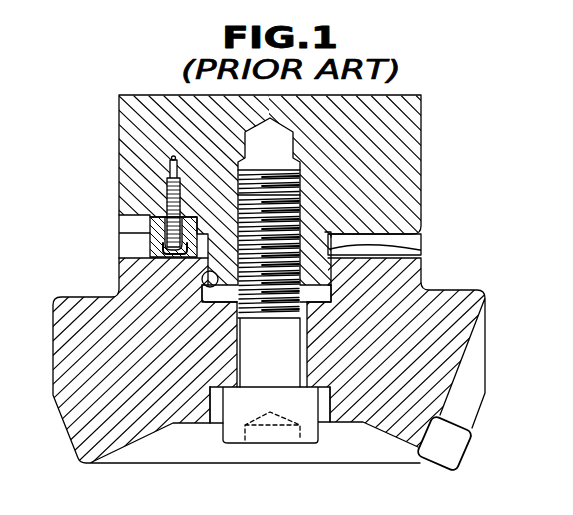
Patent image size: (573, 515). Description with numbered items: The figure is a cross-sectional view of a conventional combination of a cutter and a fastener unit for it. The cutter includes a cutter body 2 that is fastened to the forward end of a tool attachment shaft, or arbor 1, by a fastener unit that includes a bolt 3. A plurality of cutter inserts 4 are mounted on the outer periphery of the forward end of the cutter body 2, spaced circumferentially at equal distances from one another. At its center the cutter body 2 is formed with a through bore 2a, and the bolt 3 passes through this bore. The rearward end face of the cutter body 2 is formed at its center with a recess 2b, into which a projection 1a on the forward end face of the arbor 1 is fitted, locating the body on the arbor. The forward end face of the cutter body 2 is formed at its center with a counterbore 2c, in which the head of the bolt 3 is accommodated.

The arbor 1 is at (428, 152).
The projection 1a is at (422, 247).
The cutter body 2 is at (371, 444).
The through bore 2a is at (307, 351).
The recess 2b is at (203, 298).
The counterbore 2c is at (218, 414).
The bolt 3 is at (283, 444).
The cutter inserts 4 is at (473, 447).